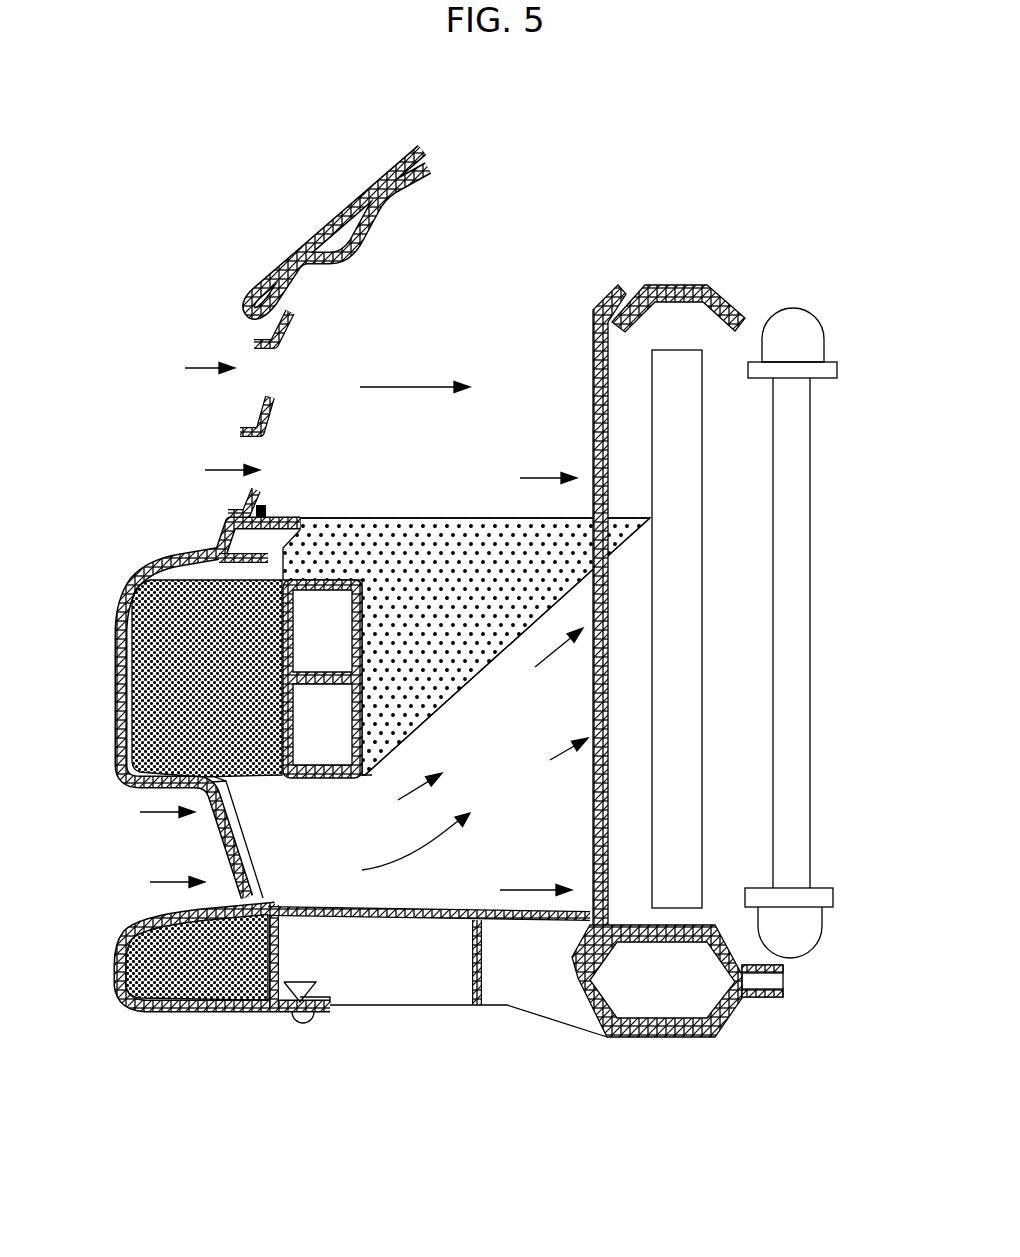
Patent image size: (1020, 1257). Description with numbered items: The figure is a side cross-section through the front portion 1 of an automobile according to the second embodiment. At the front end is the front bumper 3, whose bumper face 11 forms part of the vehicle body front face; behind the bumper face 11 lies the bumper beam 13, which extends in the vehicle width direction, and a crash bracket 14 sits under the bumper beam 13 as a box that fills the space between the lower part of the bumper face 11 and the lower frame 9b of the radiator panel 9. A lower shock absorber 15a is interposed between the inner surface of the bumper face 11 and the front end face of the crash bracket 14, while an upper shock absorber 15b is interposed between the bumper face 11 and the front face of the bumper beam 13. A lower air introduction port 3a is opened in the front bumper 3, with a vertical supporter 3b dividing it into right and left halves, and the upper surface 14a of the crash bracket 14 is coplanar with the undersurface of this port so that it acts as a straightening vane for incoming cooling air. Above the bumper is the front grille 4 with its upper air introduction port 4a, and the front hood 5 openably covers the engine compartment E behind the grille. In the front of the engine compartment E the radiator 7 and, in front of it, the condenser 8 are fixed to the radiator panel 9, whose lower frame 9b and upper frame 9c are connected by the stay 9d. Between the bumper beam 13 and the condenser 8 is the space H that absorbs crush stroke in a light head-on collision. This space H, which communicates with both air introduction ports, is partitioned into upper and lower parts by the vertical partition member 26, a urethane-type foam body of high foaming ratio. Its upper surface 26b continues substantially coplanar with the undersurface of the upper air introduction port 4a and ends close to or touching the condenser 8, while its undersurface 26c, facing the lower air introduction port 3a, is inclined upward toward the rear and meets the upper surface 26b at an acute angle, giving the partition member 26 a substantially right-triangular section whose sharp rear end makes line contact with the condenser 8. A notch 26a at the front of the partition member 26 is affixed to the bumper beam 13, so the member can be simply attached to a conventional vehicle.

The front portion 1 is at (311, 141).
The front bumper 3 is at (262, 1061).
The lower air introduction port 3a is at (287, 875).
The vertical supporter 3b is at (222, 838).
The front grille 4 is at (255, 339).
The upper air introduction port 4a is at (322, 462).
The front hood 5 is at (384, 180).
The radiator 7 is at (810, 755).
The condenser 8 is at (702, 633).
The radiator panel 9 is at (749, 277).
The lower frame 9b is at (662, 1038).
The upper frame 9c is at (675, 293).
The stay 9d is at (593, 333).
The bumper face 11 is at (150, 572).
The bumper beam 13 is at (308, 778).
The crash bracket 14 is at (425, 1006).
The upper surface 14a is at (470, 912).
The lower shock absorber 15a is at (175, 1000).
The upper shock absorber 15b is at (200, 580).
The vertical partition member 26 is at (488, 502).
The notch 26a is at (348, 740).
The upper surface 26b is at (423, 518).
The undersurface 26c is at (500, 653).
The engine compartment E is at (877, 577).
The space H is at (480, 731).